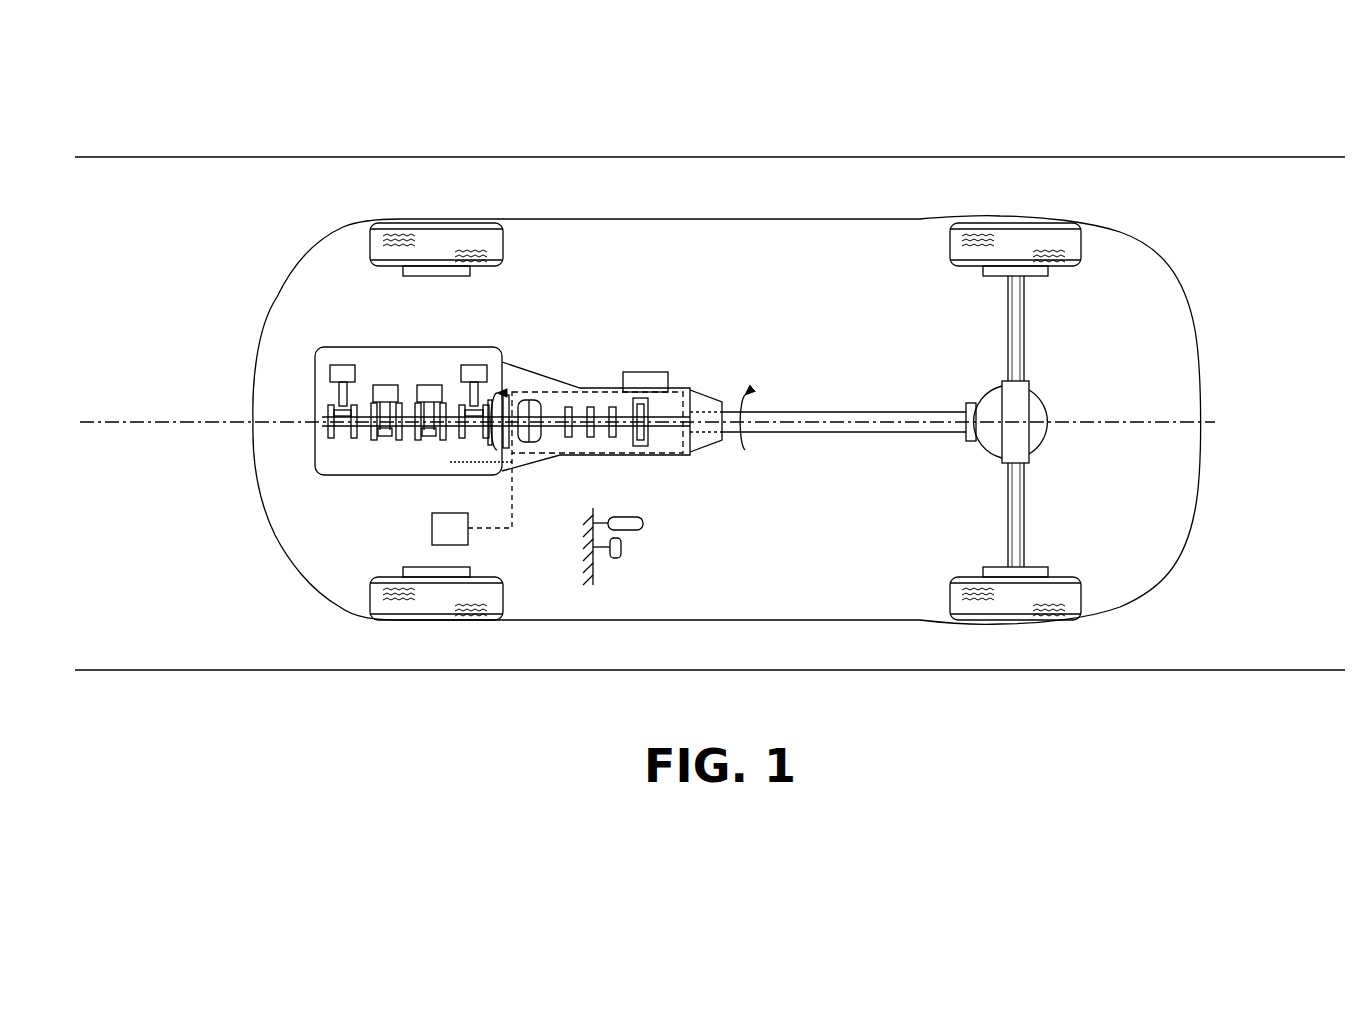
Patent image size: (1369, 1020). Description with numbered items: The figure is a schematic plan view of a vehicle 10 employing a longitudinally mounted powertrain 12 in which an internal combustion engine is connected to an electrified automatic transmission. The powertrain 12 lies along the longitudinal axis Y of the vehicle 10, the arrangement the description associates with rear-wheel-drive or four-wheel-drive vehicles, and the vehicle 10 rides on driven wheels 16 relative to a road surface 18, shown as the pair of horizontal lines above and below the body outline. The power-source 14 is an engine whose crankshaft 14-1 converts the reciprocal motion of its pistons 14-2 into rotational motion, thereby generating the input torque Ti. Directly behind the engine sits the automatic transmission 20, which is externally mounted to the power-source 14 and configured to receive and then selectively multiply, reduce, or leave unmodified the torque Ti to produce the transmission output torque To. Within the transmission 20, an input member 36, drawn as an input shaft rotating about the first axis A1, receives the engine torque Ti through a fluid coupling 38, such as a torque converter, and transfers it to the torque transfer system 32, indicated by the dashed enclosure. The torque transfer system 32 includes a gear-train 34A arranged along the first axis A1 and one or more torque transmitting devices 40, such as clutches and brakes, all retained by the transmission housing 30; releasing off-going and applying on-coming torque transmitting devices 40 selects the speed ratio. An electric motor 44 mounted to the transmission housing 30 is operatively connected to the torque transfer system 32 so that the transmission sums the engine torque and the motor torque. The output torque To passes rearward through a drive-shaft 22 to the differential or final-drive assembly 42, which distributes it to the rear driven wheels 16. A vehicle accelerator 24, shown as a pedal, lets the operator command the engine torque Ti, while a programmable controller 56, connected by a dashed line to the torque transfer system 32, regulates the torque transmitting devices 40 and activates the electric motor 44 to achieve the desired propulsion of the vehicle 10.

The vehicle 10 is at (990, 135).
The powertrain 12 is at (353, 490).
The power-source 14 is at (353, 390).
The crankshaft 14-1 is at (362, 440).
The pistons 14-2 is at (334, 364).
The driven wheels 16 is at (1030, 238).
The road surface 18 is at (181, 638).
The automatic transmission 20 is at (642, 386).
The drive-shaft 22 is at (842, 433).
The vehicle accelerator 24 is at (643, 523).
The transmission housing 30 is at (565, 457).
The torque transfer system 32 is at (549, 386).
The gear-train 34A is at (615, 436).
The input member 36 is at (550, 442).
The fluid coupling 38 is at (522, 398).
The torque transmitting device 40 is at (662, 402).
The differential or final-drive assembly 42 is at (1030, 387).
The electric motor 44 is at (673, 372).
The programmable controller 56 is at (439, 540).
The longitudinal axis Y is at (166, 419).
The first axis A1 is at (500, 405).
The input torque Ti is at (485, 443).
The transmission output torque To is at (745, 440).